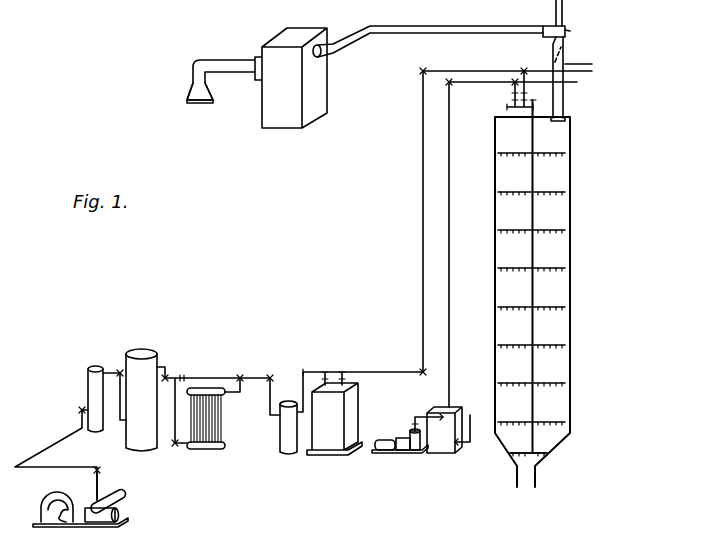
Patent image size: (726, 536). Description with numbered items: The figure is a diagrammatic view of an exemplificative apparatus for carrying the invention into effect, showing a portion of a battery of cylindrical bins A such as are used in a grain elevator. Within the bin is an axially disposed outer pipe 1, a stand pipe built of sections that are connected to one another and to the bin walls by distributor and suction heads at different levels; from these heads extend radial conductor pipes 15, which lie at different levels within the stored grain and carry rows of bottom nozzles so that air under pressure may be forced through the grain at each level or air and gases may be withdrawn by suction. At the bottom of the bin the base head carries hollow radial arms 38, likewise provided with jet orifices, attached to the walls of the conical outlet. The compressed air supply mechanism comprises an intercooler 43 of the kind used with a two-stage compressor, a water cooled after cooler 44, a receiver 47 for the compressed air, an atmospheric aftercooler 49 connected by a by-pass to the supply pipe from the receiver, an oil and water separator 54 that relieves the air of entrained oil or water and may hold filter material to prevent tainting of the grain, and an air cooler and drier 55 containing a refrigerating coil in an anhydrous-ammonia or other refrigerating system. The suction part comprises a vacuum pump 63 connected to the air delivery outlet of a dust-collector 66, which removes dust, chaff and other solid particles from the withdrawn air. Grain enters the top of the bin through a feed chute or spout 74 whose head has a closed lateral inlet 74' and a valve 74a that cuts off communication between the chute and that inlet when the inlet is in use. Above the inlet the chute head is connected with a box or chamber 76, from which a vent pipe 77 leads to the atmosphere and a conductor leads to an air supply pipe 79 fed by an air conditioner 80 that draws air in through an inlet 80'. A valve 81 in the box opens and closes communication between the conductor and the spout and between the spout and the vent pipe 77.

The outer pipe 1 is at (533, 212).
The battery of cylindrical bins A is at (583, 239).
The radial conductor pipes 15 is at (545, 192).
The hollow radial arms 38 is at (540, 454).
The intercooler 43 is at (80, 498).
The water cooled after cooler 44 is at (88, 386).
The receiver 47 is at (143, 374).
The atmospheric aftercooler 49 is at (212, 425).
The oil and water separator 54 is at (289, 441).
The air cooler and drier 55 is at (352, 418).
The vacuum pump 63 is at (407, 433).
The dust-collector 66 is at (451, 445).
The feed chute or spout 74 is at (573, 79).
The lateral inlet 74' is at (517, 57).
The valve 74a is at (566, 40).
The box or chamber 76 is at (567, 32).
The vent pipe 77 is at (563, 9).
The air supply pipe 79 is at (423, 30).
The air conditioner 80 is at (257, 70).
The inlet 80' is at (186, 89).
The valve 81 is at (570, 30).